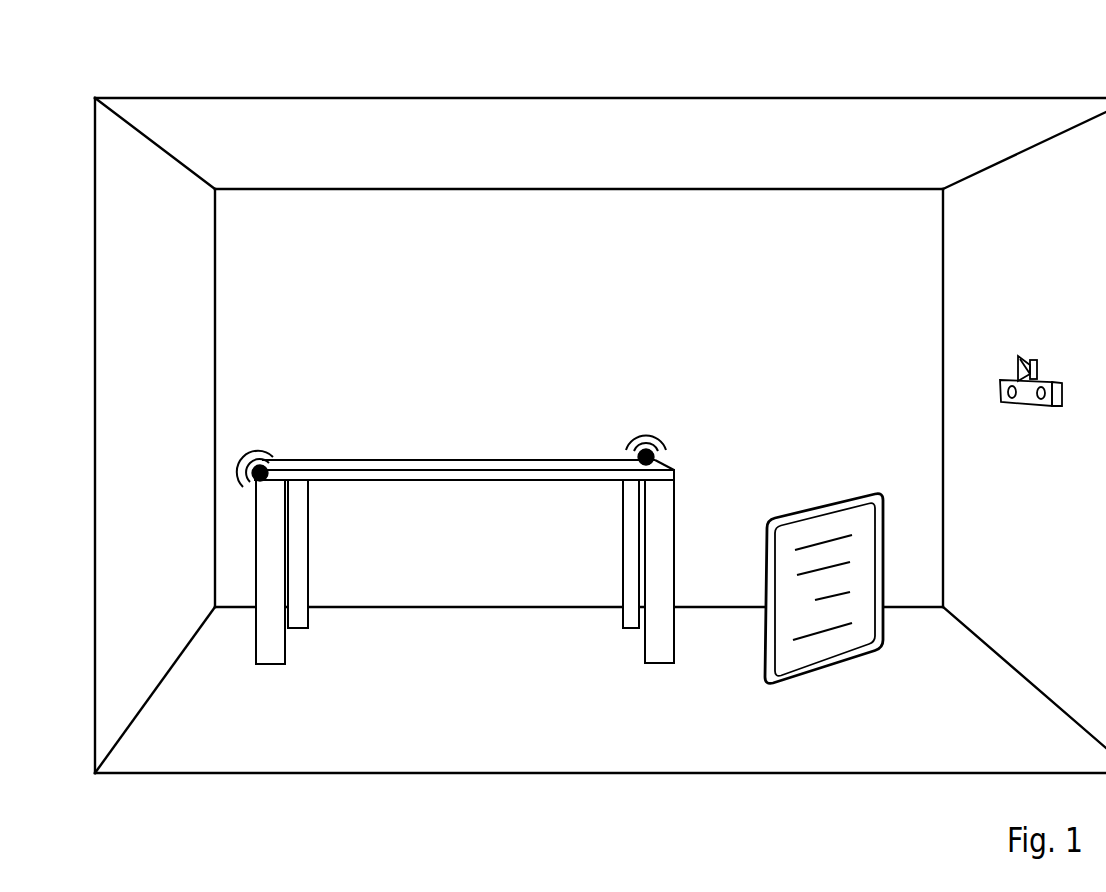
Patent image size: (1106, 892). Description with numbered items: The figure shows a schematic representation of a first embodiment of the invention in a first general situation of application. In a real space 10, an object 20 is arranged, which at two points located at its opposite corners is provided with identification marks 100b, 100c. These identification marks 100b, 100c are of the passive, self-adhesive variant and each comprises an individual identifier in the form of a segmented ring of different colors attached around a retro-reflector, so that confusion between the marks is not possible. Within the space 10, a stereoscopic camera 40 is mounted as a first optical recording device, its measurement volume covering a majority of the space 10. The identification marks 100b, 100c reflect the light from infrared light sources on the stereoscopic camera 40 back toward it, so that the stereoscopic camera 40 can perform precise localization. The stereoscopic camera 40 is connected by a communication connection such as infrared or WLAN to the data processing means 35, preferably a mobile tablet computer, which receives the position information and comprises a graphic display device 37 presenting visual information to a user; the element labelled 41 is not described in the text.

The space 10 is at (619, 90).
The object 20 is at (502, 462).
The identification mark 100b is at (654, 458).
The identification mark 100c is at (252, 485).
The data processing means 35 is at (885, 648).
The graphic display device 37 is at (805, 657).
The stereoscopic camera 40 is at (1027, 398).
The speaker 41 is at (1022, 352).